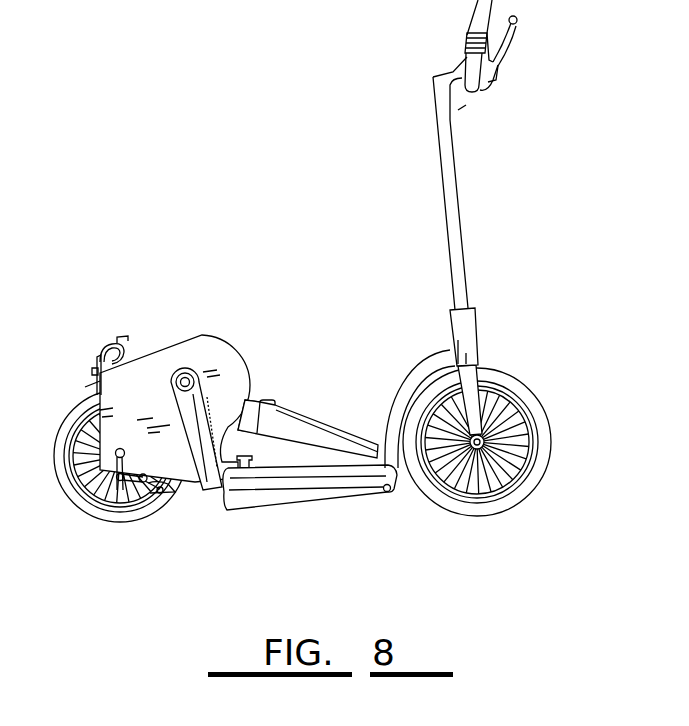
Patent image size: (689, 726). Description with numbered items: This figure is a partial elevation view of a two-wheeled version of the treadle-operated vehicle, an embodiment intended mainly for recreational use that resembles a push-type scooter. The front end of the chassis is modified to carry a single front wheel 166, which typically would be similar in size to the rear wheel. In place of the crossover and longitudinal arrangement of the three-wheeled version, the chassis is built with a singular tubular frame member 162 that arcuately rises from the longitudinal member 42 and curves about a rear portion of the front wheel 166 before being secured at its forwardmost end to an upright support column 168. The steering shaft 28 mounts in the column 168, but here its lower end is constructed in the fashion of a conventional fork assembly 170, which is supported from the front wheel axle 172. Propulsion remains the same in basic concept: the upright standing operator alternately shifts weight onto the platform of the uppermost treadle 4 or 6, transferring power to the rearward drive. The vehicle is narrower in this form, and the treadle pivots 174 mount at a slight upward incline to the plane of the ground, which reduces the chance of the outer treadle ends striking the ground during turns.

The treadle 4 is at (283, 487).
The treadle 6 is at (350, 428).
The steering shaft 28 is at (458, 200).
The longitudinal member 42 is at (270, 461).
The tubular frame member 162 is at (430, 352).
The front wheel 166 is at (525, 498).
The upright support column 168 is at (476, 315).
The fork assembly 170 is at (478, 372).
The front wheel axle 172 is at (490, 425).
The treadle pivot 174 is at (388, 497).